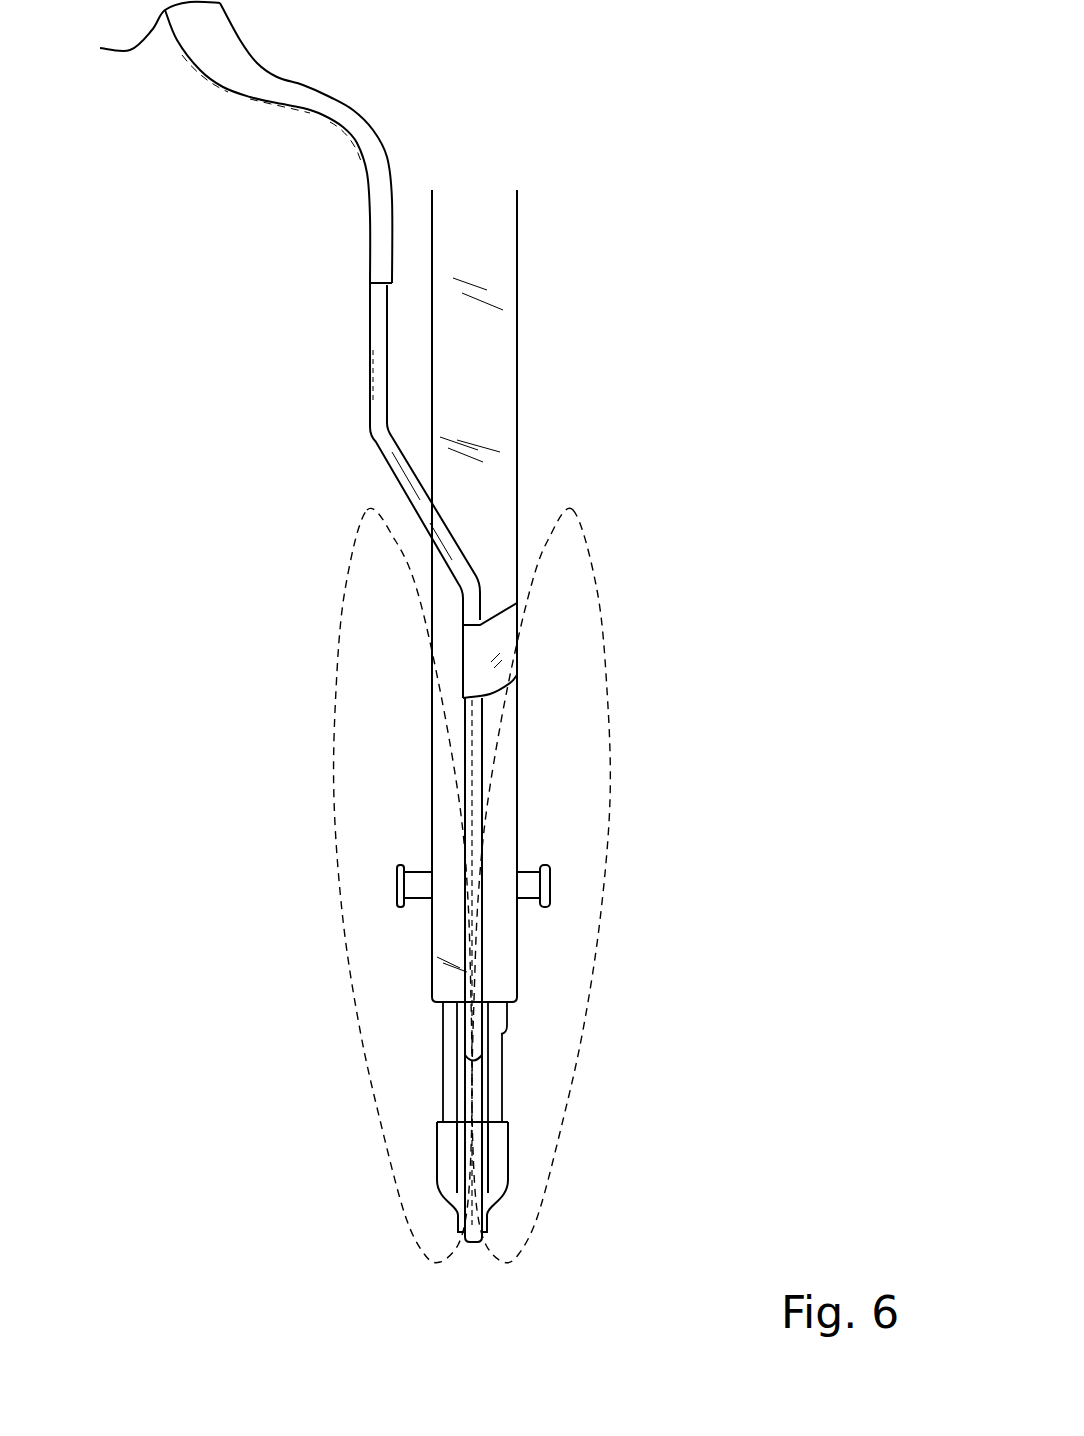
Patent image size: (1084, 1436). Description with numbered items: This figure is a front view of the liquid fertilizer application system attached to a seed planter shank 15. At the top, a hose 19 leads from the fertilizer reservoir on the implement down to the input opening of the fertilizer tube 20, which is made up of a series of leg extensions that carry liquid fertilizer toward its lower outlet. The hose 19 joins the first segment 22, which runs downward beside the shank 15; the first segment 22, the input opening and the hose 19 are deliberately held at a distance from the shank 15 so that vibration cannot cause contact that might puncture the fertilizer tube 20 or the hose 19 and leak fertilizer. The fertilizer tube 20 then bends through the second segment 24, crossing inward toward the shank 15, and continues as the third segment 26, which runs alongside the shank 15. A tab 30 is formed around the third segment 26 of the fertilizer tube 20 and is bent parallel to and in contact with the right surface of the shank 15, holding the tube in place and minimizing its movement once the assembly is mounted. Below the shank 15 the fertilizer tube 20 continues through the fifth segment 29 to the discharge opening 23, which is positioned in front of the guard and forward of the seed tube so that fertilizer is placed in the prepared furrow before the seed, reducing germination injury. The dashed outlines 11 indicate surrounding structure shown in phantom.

The balloon / expandable member (dashed) 11 is at (612, 775).
The shank 15 is at (490, 375).
The hose 19 is at (343, 107).
The fertilizer tube 20 is at (355, 407).
The first segment 22 is at (377, 333).
The discharge opening 23 is at (470, 1243).
The second segment 24 is at (402, 472).
The third segment 26 is at (477, 815).
The fifth segment 29 is at (475, 1210).
The tab 30 is at (497, 643).